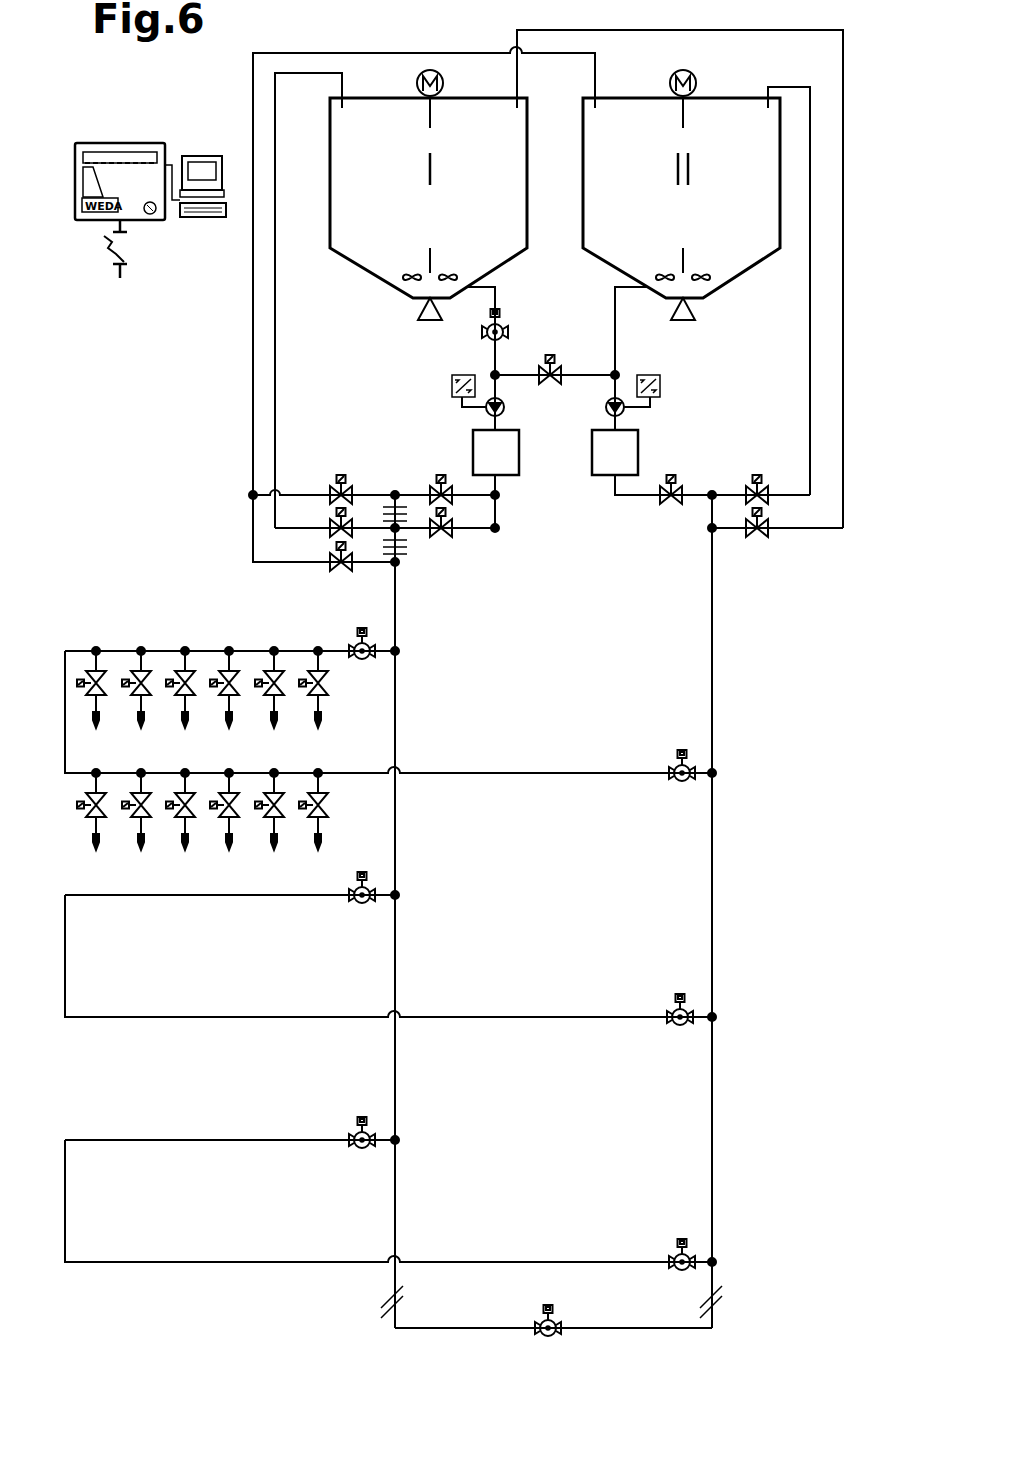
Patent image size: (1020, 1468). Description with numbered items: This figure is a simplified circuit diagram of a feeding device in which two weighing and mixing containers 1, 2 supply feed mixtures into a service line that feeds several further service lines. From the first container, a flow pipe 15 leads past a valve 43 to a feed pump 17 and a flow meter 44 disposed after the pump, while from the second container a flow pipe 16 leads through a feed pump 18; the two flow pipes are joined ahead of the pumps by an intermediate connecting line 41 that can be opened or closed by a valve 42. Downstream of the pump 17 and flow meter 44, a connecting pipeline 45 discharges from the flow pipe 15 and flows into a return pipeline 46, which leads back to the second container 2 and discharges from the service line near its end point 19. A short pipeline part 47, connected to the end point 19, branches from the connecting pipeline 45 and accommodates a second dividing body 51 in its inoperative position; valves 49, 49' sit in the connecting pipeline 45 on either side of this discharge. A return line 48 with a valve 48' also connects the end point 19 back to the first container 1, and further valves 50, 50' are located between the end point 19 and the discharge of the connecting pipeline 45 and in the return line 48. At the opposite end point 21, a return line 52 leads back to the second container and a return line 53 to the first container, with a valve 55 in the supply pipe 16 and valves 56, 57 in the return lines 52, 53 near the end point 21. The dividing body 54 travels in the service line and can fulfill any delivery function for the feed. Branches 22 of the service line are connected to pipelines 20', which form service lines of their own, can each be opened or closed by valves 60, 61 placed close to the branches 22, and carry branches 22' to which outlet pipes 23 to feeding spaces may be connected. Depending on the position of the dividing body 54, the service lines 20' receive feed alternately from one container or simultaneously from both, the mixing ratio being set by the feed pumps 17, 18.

The weighing and mixing container 1 is at (330, 250).
The weighing and mixing container 2 is at (583, 250).
The flow pipe 15 is at (490, 293).
The flow pipe 16 is at (617, 327).
The feed pump 17 is at (462, 407).
The feed pump 18 is at (637, 413).
The end point of the service line 19 is at (377, 503).
The pipelines 20' is at (393, 989).
The end point of the service line 21 is at (712, 490).
The branches 22 is at (417, 991).
The branches 22' is at (202, 714).
The outlet pipe 23 is at (322, 702).
The intermediate connecting line 41 is at (594, 373).
The valve 42 is at (540, 384).
The valve 43 is at (505, 339).
The flow meter 44 is at (519, 470).
The connecting pipeline 45 is at (290, 493).
The return pipeline 46 is at (253, 375).
The pipeline part 47 is at (394, 492).
The return line 48 is at (262, 300).
The valve 48' is at (295, 519).
The valve 49 is at (445, 465).
The valve 49' is at (356, 449).
The valve 50 is at (457, 522).
The valve 50' is at (296, 548).
The second dividing body 51 is at (410, 512).
The return line 52 is at (810, 360).
The return line 53 is at (843, 313).
The dividing body 54 is at (406, 548).
The valve 55 is at (663, 501).
The valve 56 is at (766, 488).
The valve 57 is at (768, 537).
The valve 60 is at (350, 643).
The valve 61 is at (672, 766).